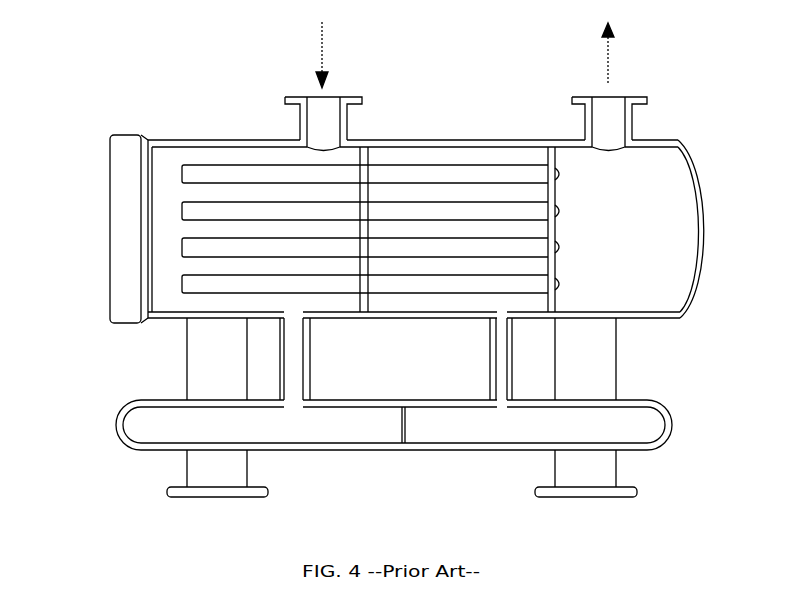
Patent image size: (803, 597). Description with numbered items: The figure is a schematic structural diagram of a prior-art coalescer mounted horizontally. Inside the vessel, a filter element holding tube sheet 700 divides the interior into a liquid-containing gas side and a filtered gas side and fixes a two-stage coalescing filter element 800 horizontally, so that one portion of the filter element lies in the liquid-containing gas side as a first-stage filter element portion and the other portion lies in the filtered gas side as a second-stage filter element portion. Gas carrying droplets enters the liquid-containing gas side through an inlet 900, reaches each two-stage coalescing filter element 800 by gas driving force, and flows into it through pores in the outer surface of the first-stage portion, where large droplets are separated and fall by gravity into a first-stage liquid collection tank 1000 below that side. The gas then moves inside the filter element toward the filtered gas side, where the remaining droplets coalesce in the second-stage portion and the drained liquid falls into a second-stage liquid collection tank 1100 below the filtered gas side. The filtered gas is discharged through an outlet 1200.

The filter element holding tube sheet 700 is at (360, 158).
The two-stage coalescing filter element 800 is at (273, 162).
The inlet 900 is at (320, 118).
The first-stage liquid collection tank 1000 is at (158, 427).
The second-stage liquid collection tank 1100 is at (627, 425).
The outlet 1200 is at (608, 117).